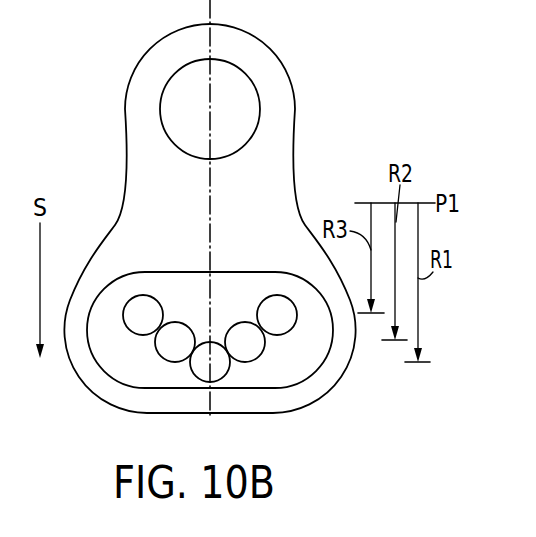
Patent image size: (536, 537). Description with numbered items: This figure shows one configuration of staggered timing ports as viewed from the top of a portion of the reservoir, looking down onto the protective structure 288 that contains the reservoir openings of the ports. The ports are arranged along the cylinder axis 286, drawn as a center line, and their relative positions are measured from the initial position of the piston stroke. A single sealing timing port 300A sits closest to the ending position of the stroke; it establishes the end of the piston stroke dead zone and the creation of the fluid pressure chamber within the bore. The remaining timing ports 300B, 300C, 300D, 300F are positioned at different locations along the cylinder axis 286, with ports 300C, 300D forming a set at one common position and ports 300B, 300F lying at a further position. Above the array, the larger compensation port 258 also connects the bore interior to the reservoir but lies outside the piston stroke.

The cylinder axis 286 is at (208, 15).
The compensation port 258 is at (160, 93).
The protective structure 288 is at (125, 147).
The sealing timing port 300A is at (203, 381).
The timing port 300B is at (143, 295).
The timing port 300C is at (245, 322).
The timing port 300D is at (177, 322).
The timing port 300F is at (278, 295).